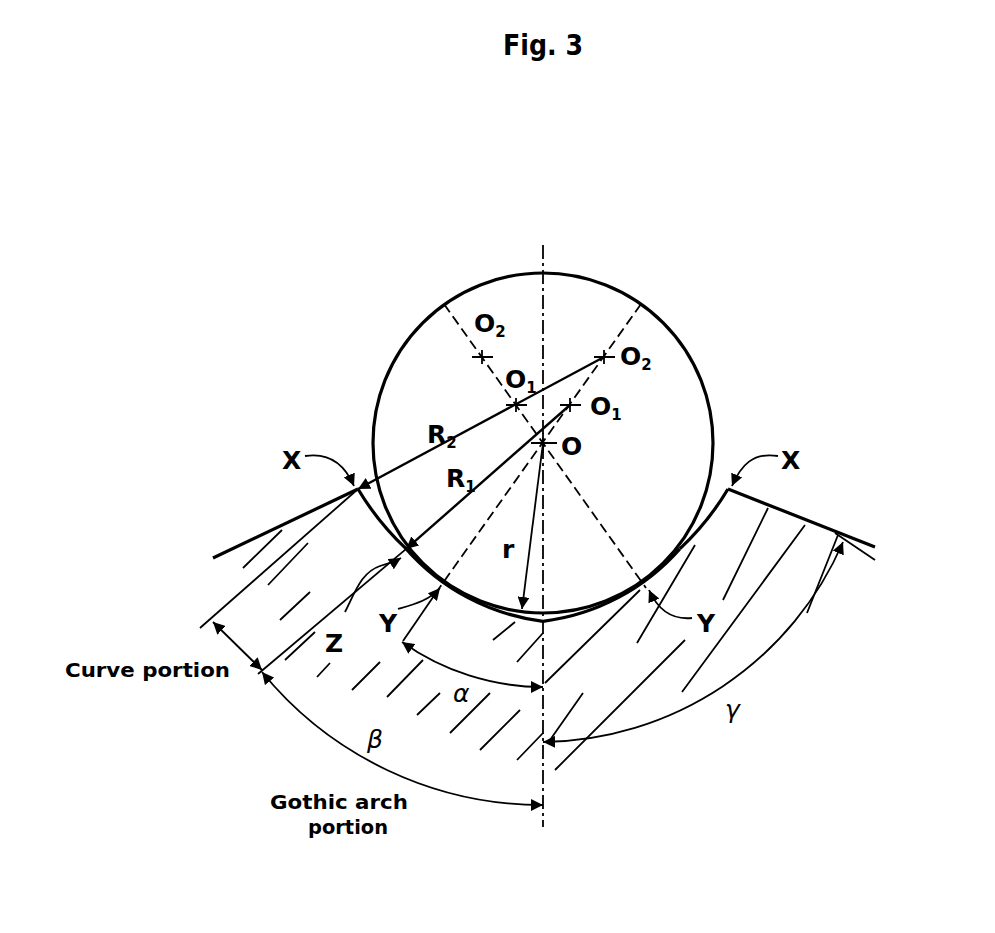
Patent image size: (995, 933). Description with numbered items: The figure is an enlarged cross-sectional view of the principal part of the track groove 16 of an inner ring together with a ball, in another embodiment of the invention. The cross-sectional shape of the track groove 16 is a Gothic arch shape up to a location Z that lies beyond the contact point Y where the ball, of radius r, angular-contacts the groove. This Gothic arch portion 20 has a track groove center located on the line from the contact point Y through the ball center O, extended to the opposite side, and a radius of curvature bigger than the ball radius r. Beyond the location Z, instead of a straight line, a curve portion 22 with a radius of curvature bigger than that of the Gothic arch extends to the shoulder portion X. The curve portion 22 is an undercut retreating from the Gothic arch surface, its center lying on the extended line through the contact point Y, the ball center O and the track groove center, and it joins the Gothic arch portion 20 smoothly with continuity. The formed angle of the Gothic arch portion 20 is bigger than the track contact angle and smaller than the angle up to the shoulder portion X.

The track groove 16 is at (578, 606).
The Gothic arch portion 20 is at (469, 600).
The curve portion 22 is at (384, 510).